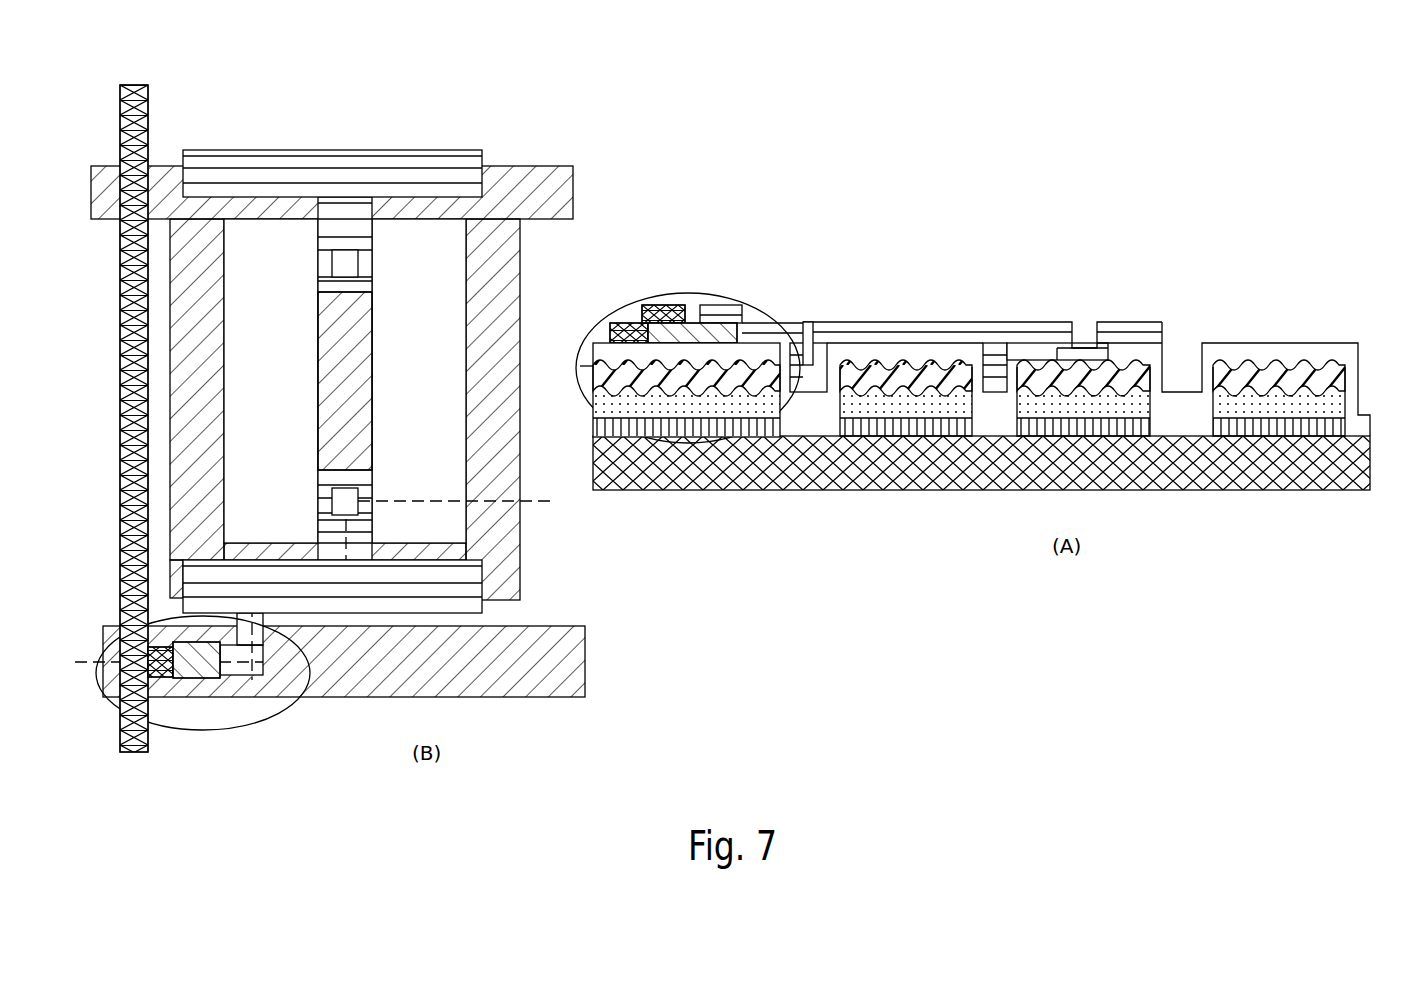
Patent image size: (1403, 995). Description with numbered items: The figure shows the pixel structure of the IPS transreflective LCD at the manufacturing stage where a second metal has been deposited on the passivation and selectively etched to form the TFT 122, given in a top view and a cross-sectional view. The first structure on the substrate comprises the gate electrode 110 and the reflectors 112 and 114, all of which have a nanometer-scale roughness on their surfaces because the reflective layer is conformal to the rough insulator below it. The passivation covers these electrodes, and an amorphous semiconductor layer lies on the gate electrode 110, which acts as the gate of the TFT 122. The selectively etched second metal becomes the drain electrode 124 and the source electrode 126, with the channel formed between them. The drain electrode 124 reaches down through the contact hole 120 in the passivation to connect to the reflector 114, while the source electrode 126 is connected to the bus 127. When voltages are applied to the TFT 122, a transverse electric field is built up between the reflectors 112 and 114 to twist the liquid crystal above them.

The gate electrode 110 is at (603, 362).
The reflector 112 is at (903, 359).
The reflector 114 is at (1133, 359).
The contact hole 120 is at (358, 263).
The TFT 122 is at (203, 732).
The drain electrode 124 is at (336, 151).
The source electrode 126 is at (148, 700).
The bus 127 is at (150, 102).